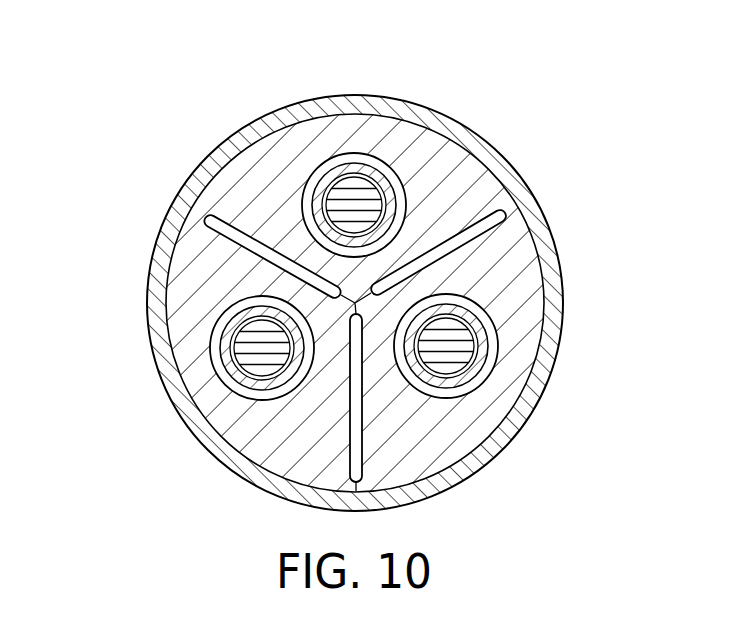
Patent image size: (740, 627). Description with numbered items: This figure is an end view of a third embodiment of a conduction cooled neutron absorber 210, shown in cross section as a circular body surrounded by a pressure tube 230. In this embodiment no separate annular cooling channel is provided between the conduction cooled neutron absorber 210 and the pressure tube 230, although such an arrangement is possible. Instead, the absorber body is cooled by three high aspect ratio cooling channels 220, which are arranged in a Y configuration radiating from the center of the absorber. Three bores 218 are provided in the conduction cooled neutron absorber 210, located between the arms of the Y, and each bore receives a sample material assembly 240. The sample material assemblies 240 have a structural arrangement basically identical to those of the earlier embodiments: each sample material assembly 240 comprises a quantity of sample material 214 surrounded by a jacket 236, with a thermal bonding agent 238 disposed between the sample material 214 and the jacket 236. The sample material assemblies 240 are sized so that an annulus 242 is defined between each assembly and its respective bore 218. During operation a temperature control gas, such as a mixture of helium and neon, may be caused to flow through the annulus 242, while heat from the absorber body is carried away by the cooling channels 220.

The conduction cooled neutron absorber 210 is at (194, 290).
The sample material 214 is at (447, 358).
The bores 218 is at (433, 398).
The high aspect ratio cooling channels 220 is at (203, 218).
The pressure tube 230 is at (247, 127).
The jacket 236 is at (378, 183).
The thermal bonding agent 238 is at (474, 355).
The sample material assemblies 240 is at (415, 257).
The annulus 242 is at (386, 150).